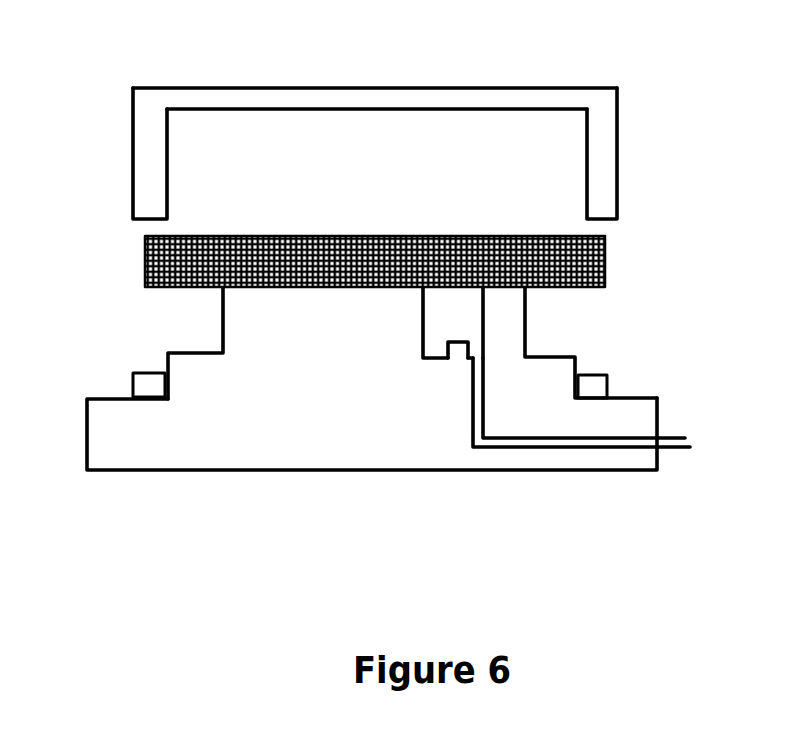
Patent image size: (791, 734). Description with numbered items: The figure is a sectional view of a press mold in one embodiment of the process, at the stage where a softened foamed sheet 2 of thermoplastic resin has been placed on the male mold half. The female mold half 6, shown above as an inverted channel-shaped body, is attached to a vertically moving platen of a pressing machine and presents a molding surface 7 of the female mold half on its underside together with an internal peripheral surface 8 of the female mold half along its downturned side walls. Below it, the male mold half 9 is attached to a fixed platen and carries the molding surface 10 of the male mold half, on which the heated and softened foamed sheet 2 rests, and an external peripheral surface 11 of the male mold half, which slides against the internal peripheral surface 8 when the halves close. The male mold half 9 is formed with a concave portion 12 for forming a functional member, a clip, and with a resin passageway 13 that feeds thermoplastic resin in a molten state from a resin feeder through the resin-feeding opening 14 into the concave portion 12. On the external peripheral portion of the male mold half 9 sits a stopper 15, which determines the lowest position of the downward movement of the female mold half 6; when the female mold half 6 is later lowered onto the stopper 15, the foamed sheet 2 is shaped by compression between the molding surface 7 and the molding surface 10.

The foamed sheet of thermoplastic resin 2 is at (166, 258).
The female mold half 6 is at (323, 109).
The molding surface of the female mold half 7 is at (316, 110).
The internal peripheral surface of the female mold half 8 is at (166, 160).
The male mold half 9 is at (212, 470).
The molding surface of the male mold half 10 is at (247, 290).
The external peripheral surface of the male mold half 11 is at (525, 320).
The concave portion 12 is at (423, 320).
The resin passageway 13 is at (472, 408).
The resin-feeding opening 14 is at (472, 360).
The stopper 15 is at (597, 383).